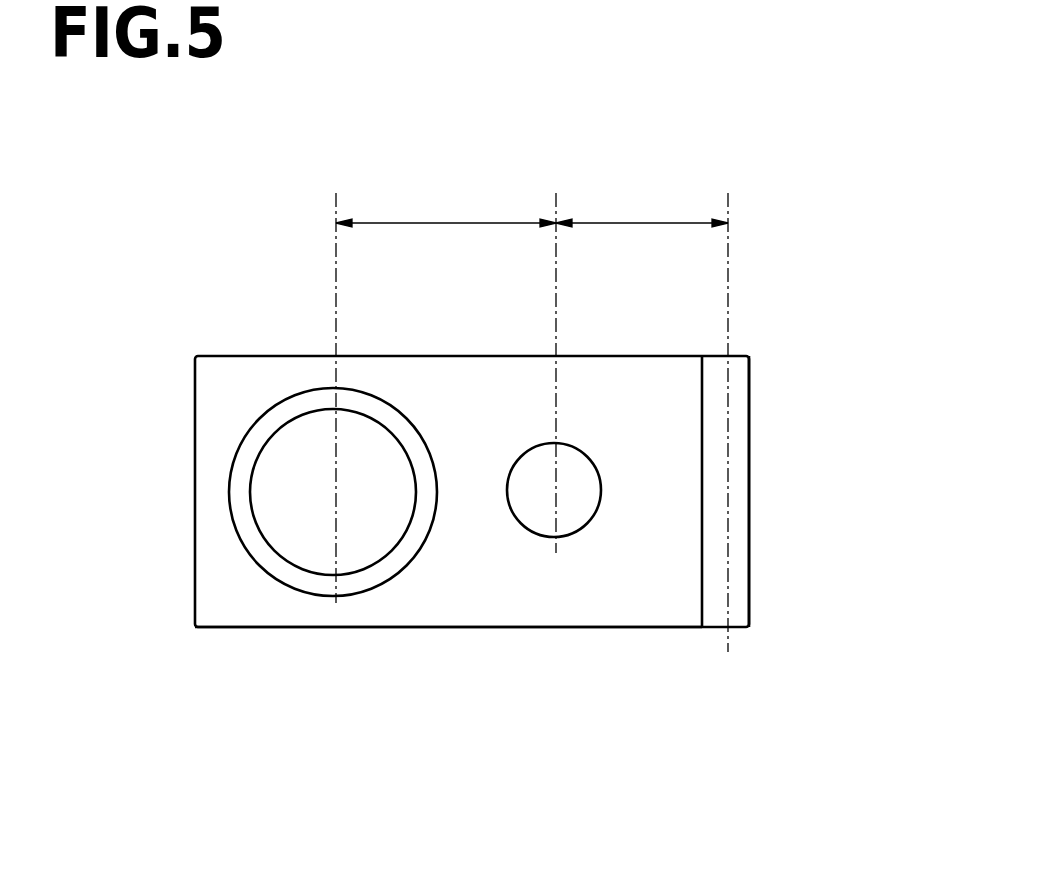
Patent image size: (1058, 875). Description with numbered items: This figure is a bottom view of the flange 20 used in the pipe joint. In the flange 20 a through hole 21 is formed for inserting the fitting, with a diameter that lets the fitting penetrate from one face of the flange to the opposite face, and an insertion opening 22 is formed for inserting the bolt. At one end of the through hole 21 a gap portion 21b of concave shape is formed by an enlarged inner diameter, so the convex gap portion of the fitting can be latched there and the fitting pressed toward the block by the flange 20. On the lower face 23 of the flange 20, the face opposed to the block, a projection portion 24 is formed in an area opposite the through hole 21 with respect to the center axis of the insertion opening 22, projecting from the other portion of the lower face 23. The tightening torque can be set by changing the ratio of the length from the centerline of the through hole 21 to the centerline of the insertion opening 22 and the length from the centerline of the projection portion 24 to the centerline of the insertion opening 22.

The flange 20 is at (772, 277).
The through hole 21 is at (285, 548).
The gap portion 21b is at (270, 418).
The insertion opening 22 is at (513, 508).
The lower face 23 is at (602, 598).
The projection portion 24 is at (738, 618).